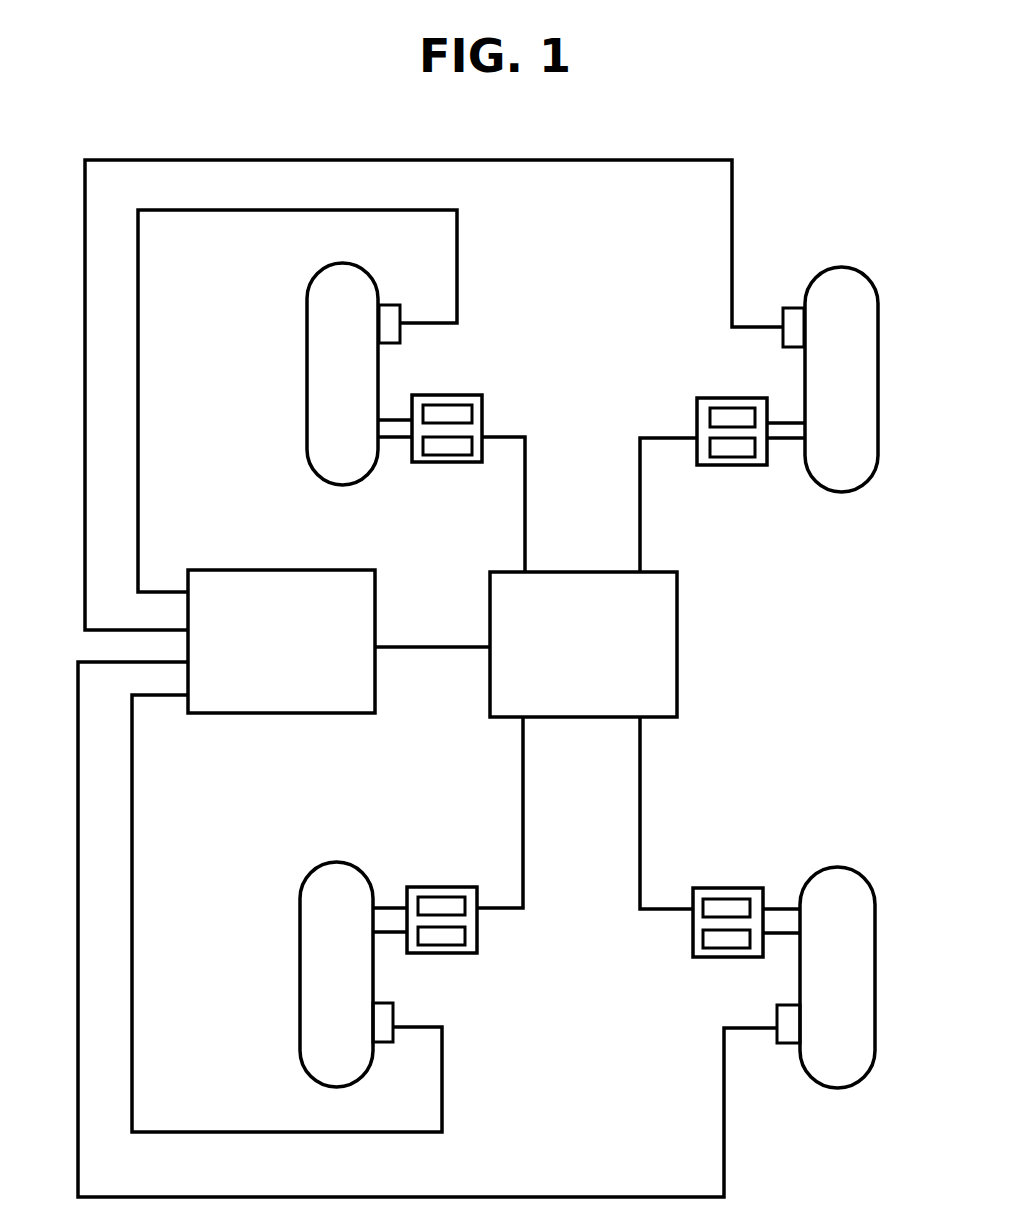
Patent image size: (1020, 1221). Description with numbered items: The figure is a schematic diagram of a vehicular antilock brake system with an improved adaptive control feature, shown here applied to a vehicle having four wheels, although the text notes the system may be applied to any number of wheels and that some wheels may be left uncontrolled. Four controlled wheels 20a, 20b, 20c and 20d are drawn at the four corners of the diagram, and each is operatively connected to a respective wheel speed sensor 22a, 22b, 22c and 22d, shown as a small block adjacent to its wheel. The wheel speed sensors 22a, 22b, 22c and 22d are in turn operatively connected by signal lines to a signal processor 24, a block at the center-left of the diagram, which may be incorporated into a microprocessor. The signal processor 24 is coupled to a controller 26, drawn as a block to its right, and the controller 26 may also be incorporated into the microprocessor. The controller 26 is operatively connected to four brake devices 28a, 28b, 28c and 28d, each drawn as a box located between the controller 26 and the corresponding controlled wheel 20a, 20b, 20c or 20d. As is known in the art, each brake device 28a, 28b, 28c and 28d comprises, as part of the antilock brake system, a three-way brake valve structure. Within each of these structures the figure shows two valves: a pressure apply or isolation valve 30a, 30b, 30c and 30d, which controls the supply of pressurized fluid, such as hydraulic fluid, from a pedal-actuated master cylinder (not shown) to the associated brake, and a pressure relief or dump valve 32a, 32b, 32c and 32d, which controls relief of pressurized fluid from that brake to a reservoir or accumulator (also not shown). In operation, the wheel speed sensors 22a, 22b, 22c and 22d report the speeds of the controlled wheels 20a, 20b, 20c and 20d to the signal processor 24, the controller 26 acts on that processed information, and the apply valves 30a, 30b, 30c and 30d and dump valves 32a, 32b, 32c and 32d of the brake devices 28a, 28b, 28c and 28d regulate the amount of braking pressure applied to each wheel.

The controlled wheel 20a is at (325, 270).
The controlled wheel 20b is at (838, 268).
The controlled wheel 20c is at (332, 862).
The controlled wheel 20d is at (836, 867).
The wheel speed sensor 22a is at (393, 304).
The wheel speed sensor 22b is at (794, 307).
The wheel speed sensor 22c is at (379, 1043).
The wheel speed sensor 22d is at (782, 1044).
The signal processor 24 is at (240, 574).
The controller 26 is at (665, 627).
The brake device 28a is at (486, 430).
The brake device 28b is at (693, 437).
The brake device 28c is at (460, 923).
The brake device 28d is at (699, 924).
The pressure apply or isolation valve 30a is at (452, 412).
The pressure apply or isolation valve 30b is at (748, 412).
The pressure apply or isolation valve 30c is at (440, 900).
The pressure apply or isolation valve 30d is at (737, 900).
The pressure relief or dump valve 32a is at (449, 450).
The pressure relief or dump valve 32b is at (743, 452).
The pressure relief or dump valve 32c is at (440, 940).
The pressure relief or dump valve 32d is at (742, 955).